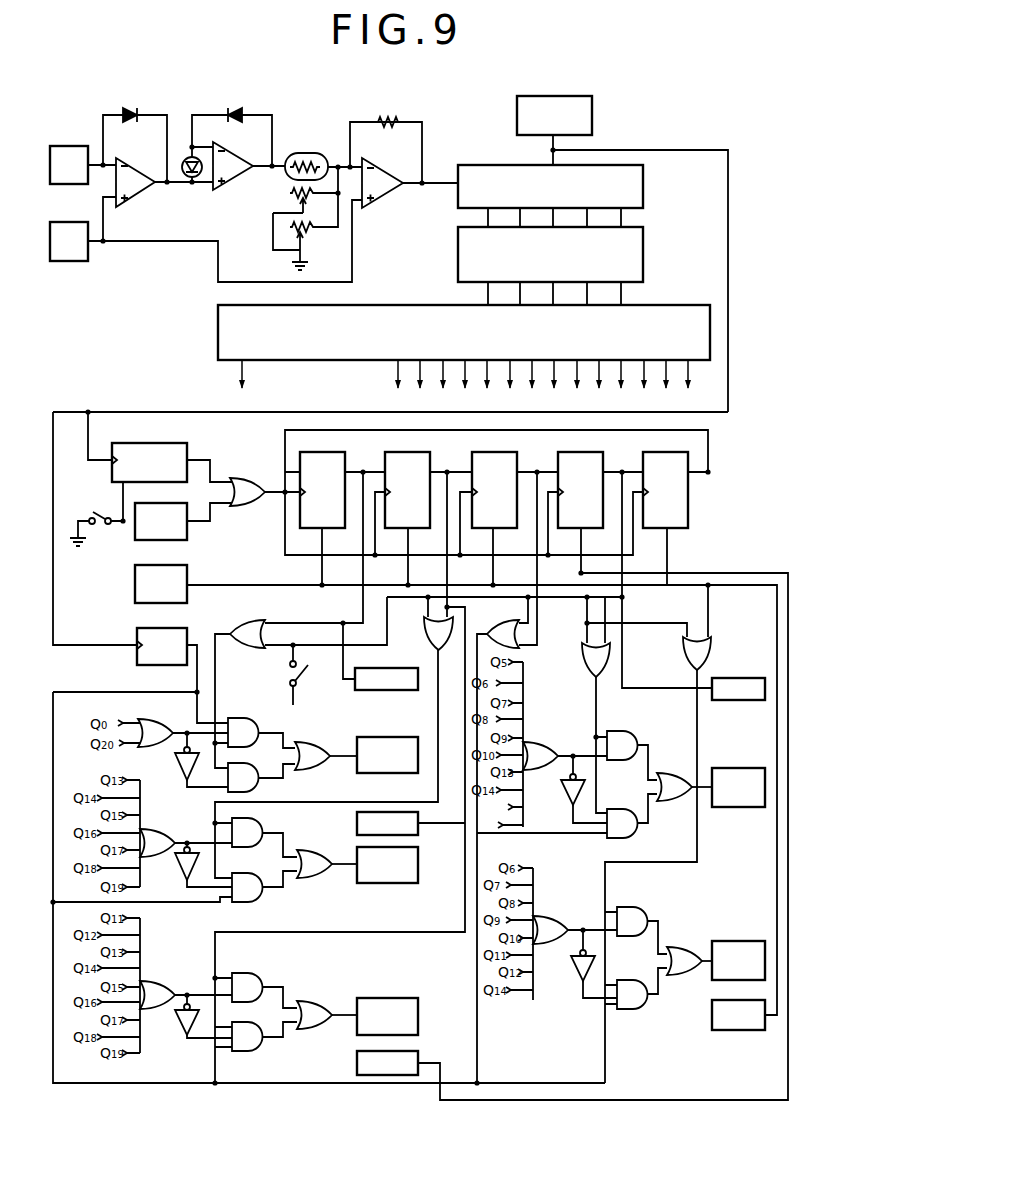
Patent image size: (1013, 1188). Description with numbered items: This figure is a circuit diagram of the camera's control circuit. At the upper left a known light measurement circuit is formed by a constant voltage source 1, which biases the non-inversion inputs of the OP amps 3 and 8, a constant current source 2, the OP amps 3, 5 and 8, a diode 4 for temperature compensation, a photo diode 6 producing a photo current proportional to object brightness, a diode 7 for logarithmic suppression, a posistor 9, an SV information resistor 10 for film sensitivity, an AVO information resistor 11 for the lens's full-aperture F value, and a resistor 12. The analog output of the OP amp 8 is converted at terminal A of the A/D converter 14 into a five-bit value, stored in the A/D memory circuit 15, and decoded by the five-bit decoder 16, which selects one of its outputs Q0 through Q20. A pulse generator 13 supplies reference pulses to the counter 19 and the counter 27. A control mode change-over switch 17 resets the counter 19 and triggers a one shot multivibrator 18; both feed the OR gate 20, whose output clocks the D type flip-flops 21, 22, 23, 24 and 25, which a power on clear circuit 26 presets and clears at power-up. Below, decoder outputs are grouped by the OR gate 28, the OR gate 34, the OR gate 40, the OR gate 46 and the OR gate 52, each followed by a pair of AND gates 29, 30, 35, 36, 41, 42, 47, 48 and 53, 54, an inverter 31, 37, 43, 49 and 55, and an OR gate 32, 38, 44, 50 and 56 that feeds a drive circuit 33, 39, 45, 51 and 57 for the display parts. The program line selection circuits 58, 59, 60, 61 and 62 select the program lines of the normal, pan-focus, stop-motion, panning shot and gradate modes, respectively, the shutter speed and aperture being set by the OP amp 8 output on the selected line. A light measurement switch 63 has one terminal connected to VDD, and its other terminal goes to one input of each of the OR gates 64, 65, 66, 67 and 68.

The constant voltage source 1 is at (72, 261).
The constant current source 2 is at (75, 146).
The operational amplifier 3 is at (138, 196).
The diode for temperature compensation 4 is at (132, 122).
The operational amplifier 5 is at (235, 178).
The photo diode 6 is at (185, 156).
The diode for logarithmic suppression 7 is at (240, 120).
The operational amplifier 8 is at (388, 194).
The posistor 9 is at (318, 153).
The SV information resistor 10 is at (282, 195).
The AVO information resistor 11 is at (318, 232).
The resistor 12 is at (388, 128).
The pulse generator 13 is at (592, 115).
The A/D converter 14 is at (643, 188).
The A/D memory circuit 15 is at (643, 253).
The decoder 16 is at (410, 305).
The control mode change-over switch 17 is at (101, 528).
The one shot multivibrator 18 is at (187, 535).
The counter 19 is at (187, 448).
The OR gate 20 is at (255, 504).
The D type flip-flop 21 is at (345, 462).
The D type flip-flop 22 is at (430, 462).
The D type flip-flop 23 is at (517, 462).
The D type flip-flop 24 is at (603, 462).
The D type flip-flop 25 is at (676, 530).
The power on clear circuit 26 is at (187, 596).
The counter 27 is at (132, 628).
The OR gate 28 is at (160, 719).
The AND gate 29 is at (245, 718).
The AND gate 30 is at (256, 765).
The inverter 31 is at (176, 770).
The OR gate 32 is at (322, 742).
The drive circuit 33 is at (400, 737).
The OR gate 34 is at (160, 829).
The AND gate 35 is at (259, 812).
The AND gate 36 is at (252, 902).
The inverter 37 is at (176, 870).
The OR gate 38 is at (312, 878).
The drive circuit 39 is at (400, 883).
The OR gate 40 is at (160, 981).
The AND gate 41 is at (247, 973).
The AND gate 42 is at (252, 1051).
The inverter 43 is at (176, 1026).
The OR gate 44 is at (318, 1001).
The drive circuit 45 is at (400, 998).
The OR gate 46 is at (546, 742).
The AND gate 47 is at (628, 719).
The AND gate 48 is at (622, 809).
The inverter 49 is at (562, 798).
The OR gate 50 is at (676, 773).
The drive circuit 51 is at (742, 768).
The OR gate 52 is at (553, 916).
The AND gate 53 is at (634, 907).
The AND gate 54 is at (632, 1009).
The inverter 55 is at (572, 975).
The OR gate 56 is at (692, 933).
The drive circuit 57 is at (748, 927).
The program line selection circuit 58 is at (375, 690).
The program line selection circuit 59 is at (357, 823).
The program line selection circuit 60 is at (357, 1063).
The program line selection circuit 61 is at (735, 700).
The program line selection circuit 62 is at (742, 1030).
The light measurement switch 63 is at (306, 683).
The OR gate 64 is at (258, 620).
The OR gate 65 is at (424, 632).
The OR gate 66 is at (500, 618).
The OR gate 67 is at (582, 660).
The OR gate 68 is at (683, 650).